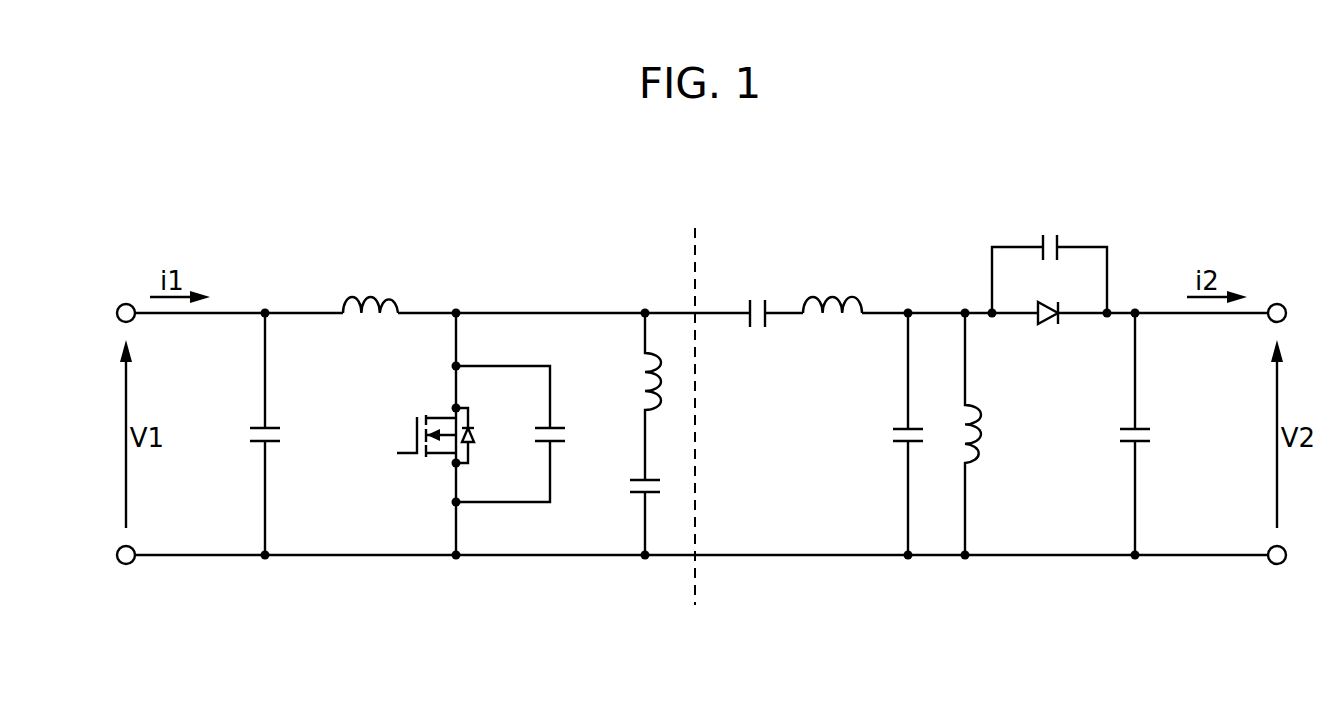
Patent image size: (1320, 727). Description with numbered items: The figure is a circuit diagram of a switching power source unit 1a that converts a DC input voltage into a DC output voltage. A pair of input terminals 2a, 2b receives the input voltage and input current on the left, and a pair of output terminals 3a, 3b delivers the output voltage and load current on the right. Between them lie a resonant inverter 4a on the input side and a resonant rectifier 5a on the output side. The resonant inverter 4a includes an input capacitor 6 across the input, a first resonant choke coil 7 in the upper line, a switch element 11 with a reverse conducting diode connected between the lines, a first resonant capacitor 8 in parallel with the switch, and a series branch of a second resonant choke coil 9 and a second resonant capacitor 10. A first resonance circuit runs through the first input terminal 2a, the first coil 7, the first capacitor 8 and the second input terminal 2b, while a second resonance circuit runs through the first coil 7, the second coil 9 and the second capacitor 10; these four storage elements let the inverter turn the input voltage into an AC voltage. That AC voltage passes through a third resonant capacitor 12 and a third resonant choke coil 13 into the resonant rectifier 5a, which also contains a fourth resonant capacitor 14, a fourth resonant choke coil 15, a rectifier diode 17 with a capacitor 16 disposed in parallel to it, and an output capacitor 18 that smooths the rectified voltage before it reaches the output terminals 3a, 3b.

The switching power source unit 1a is at (769, 168).
The first input terminal 2a is at (124, 303).
The second input terminal 2b is at (123, 565).
The output terminal 3a is at (1280, 303).
The output terminal 3b is at (1281, 565).
The resonant inverter 4a is at (457, 589).
The resonant rectifier 5a is at (980, 589).
The input capacitor 6 is at (250, 433).
The first resonant choke coil 7 is at (374, 295).
The first resonant capacitor 8 is at (567, 434).
The second resonant choke coil 9 is at (645, 374).
The second resonant capacitor 10 is at (630, 486).
The switch element 11 is at (424, 412).
The third resonant capacitor 12 is at (758, 300).
The third resonant choke coil 13 is at (833, 299).
The fourth resonant capacitor 14 is at (893, 433).
The fourth resonant choke coil 15 is at (983, 432).
The capacitor 16 is at (1048, 235).
The rectifier diode 17 is at (1050, 327).
The output capacitor 18 is at (1120, 433).